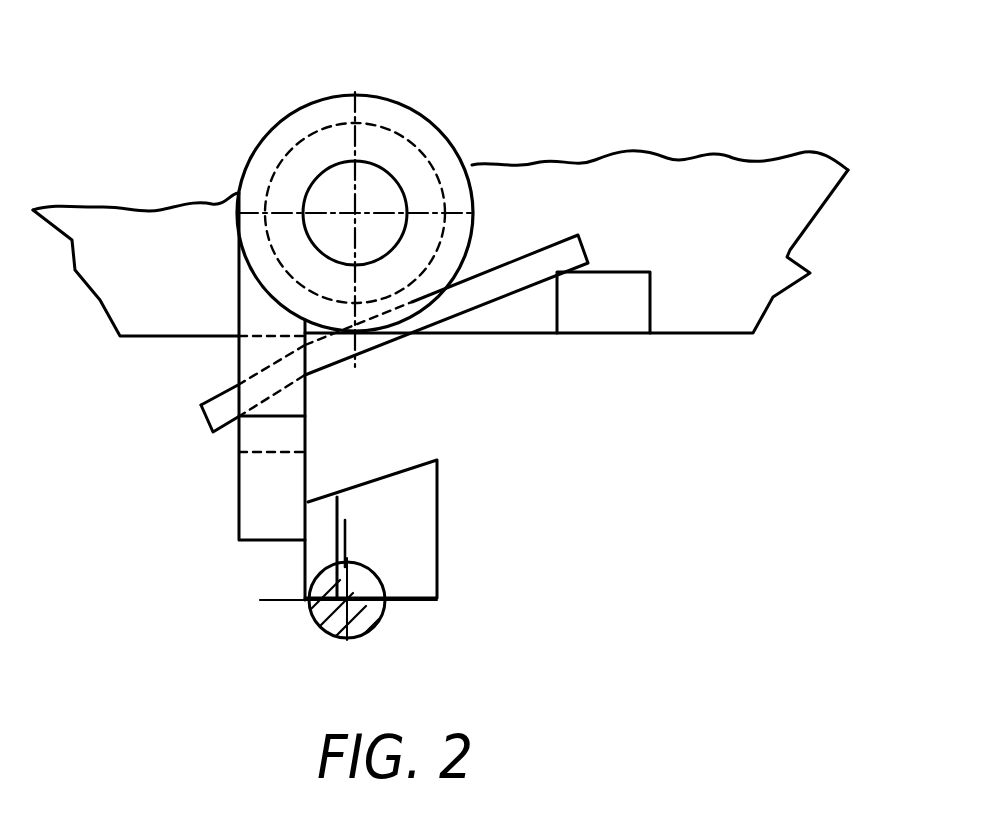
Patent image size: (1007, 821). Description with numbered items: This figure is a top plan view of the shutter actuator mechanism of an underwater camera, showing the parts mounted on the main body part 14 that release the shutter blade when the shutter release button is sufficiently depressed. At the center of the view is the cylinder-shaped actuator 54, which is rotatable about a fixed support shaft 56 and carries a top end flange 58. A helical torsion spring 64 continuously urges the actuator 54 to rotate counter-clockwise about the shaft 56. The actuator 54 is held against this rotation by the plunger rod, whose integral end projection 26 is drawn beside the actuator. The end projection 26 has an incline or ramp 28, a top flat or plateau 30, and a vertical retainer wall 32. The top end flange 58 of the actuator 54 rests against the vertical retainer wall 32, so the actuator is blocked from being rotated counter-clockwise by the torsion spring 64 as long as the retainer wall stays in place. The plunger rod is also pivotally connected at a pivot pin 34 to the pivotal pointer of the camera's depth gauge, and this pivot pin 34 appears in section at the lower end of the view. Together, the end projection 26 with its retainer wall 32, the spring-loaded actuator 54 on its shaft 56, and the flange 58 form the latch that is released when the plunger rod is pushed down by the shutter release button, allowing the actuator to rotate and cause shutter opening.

The main body part 14 is at (767, 258).
The end projection 26 is at (442, 577).
The ramp 28 is at (423, 508).
The plateau 30 is at (318, 497).
The vertical retainer wall 32 is at (300, 548).
The pivot pin 34 is at (375, 625).
The actuator 54 is at (406, 105).
The support shaft 56 is at (337, 178).
The top end flange 58 is at (239, 497).
The torsion spring 64 is at (530, 252).